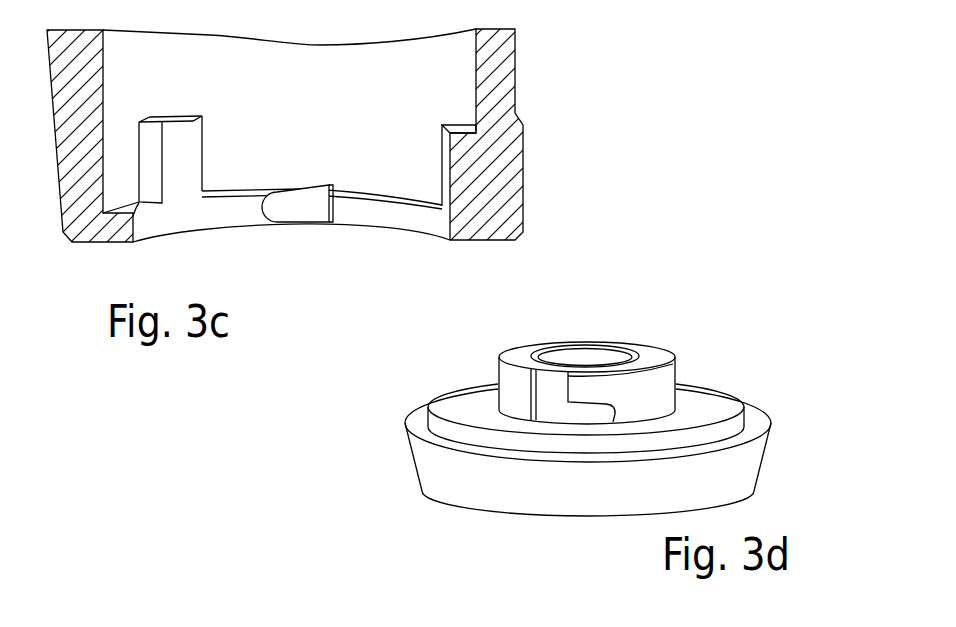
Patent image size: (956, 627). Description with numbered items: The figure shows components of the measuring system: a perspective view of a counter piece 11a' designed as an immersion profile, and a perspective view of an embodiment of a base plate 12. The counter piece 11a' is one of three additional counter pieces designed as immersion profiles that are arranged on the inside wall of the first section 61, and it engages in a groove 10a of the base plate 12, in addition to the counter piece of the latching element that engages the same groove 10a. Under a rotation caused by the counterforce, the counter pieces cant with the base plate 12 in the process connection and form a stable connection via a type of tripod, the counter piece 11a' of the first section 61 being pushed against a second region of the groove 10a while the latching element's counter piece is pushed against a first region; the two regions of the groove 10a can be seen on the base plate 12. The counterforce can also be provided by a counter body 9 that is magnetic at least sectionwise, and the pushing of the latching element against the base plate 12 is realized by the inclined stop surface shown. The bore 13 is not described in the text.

In FIG. 3C, the first section 61 is at (497, 80).
In FIG. 3C, the counter piece 11a' is at (297, 259).
In FIG. 3D, the counter body 9 is at (657, 395).
In FIG. 3D, the groove 10a is at (562, 402).
In FIG. 3D, the central bore 13 is at (603, 341).
In FIG. 3D, the base plate 12 is at (611, 498).